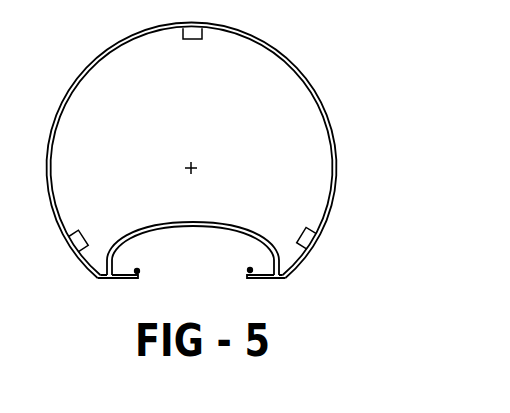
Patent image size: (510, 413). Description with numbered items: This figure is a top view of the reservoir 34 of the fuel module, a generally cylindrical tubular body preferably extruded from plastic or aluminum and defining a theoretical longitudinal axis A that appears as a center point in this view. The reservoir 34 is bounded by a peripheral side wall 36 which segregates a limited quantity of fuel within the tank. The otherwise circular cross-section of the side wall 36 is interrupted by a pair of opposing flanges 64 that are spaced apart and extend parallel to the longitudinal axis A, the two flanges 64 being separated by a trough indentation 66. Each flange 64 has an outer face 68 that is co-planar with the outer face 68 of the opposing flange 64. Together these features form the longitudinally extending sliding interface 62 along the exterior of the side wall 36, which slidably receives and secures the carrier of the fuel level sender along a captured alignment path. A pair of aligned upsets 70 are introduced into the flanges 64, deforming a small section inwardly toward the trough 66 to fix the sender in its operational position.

The reservoir 34 is at (317, 87).
The peripheral side wall 36 is at (336, 170).
The longitudinal axis A is at (197, 162).
The sliding interface 62 is at (200, 250).
The flanges 64 is at (246, 275).
The trough indentation 66 is at (145, 238).
The outer face 68 is at (118, 279).
The upsets 70 is at (137, 268).